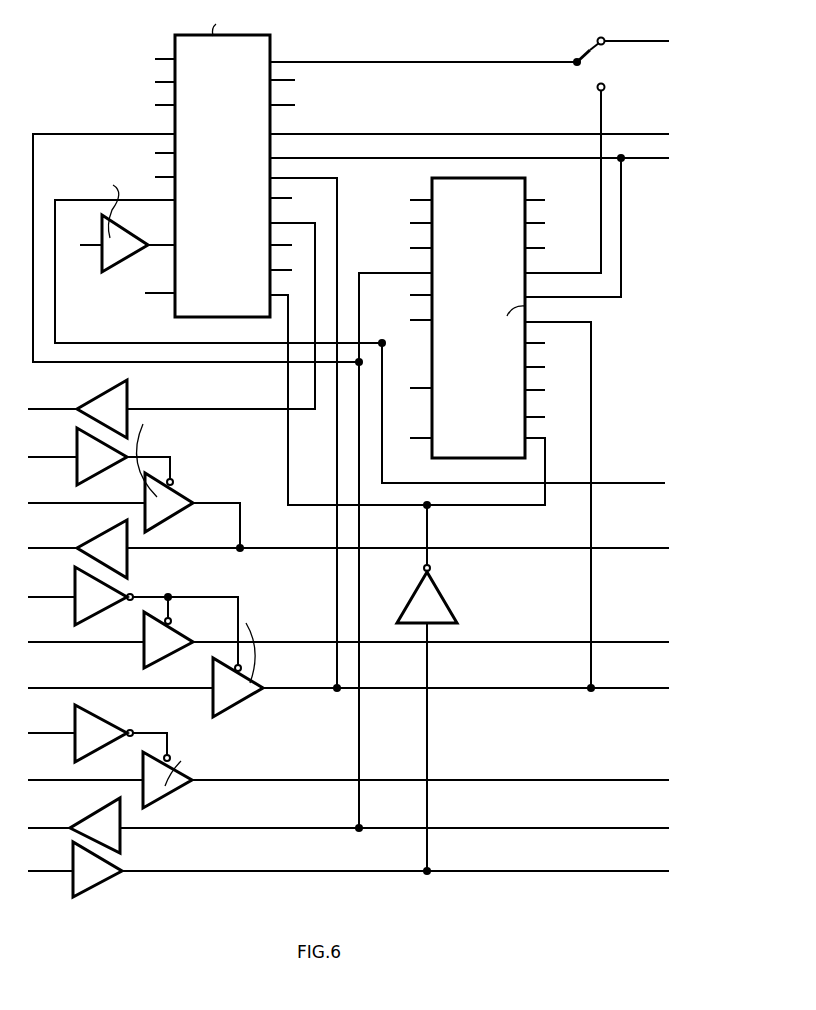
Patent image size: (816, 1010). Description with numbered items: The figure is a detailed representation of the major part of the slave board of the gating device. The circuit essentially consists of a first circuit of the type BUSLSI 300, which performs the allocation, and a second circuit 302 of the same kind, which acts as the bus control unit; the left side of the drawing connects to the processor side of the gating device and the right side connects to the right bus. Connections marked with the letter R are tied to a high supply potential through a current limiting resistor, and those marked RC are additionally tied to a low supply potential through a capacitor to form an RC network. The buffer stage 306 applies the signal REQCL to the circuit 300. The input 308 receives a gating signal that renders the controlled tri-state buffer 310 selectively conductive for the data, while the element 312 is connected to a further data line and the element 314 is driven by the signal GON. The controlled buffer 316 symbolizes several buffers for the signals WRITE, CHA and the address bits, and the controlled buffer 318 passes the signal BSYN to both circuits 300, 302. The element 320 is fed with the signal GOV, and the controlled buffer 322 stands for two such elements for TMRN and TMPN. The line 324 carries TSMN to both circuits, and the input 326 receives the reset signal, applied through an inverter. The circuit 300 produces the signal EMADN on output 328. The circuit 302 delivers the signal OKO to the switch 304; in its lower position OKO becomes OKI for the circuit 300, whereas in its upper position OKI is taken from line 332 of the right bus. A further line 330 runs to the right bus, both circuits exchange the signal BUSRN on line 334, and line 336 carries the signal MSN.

The first circuit BUSLSI 300 is at (190, 34).
The second circuit BUSLSI 302 is at (528, 184).
The switch 304 is at (585, 56).
The buffer stage 306 is at (108, 232).
The input 308 is at (44, 450).
The controlled tri-state buffer 310 is at (192, 492).
The element 312 is at (87, 542).
The element 314 is at (74, 612).
The controlled buffer 316 is at (160, 664).
The controlled buffer 318 is at (230, 706).
The element 320 is at (105, 722).
The controlled buffer 322 is at (170, 800).
The line 324 is at (600, 829).
The input 326 is at (43, 880).
The output 328 is at (44, 405).
The line 330 is at (648, 133).
The line 332 is at (651, 40).
The line 334 is at (647, 161).
The line 336 is at (626, 481).